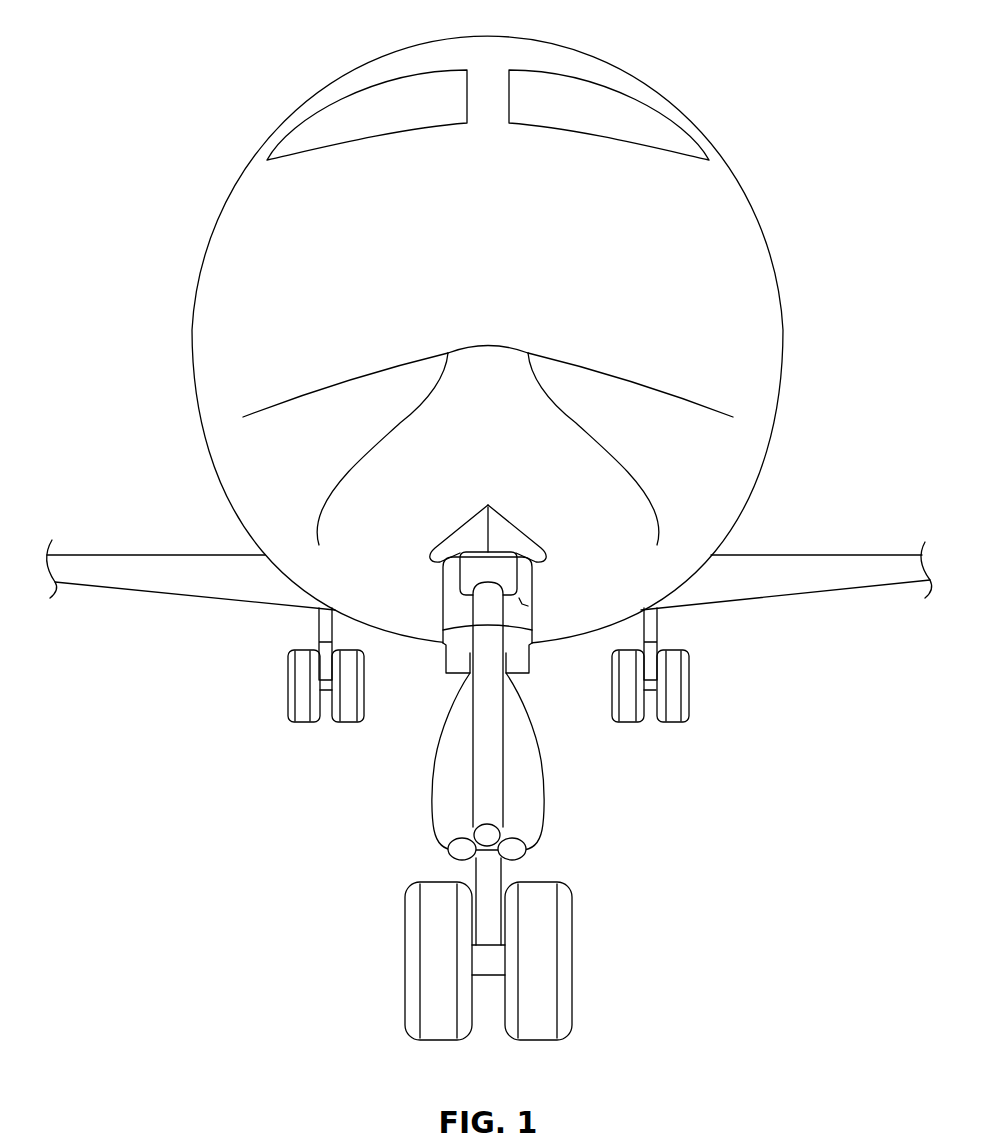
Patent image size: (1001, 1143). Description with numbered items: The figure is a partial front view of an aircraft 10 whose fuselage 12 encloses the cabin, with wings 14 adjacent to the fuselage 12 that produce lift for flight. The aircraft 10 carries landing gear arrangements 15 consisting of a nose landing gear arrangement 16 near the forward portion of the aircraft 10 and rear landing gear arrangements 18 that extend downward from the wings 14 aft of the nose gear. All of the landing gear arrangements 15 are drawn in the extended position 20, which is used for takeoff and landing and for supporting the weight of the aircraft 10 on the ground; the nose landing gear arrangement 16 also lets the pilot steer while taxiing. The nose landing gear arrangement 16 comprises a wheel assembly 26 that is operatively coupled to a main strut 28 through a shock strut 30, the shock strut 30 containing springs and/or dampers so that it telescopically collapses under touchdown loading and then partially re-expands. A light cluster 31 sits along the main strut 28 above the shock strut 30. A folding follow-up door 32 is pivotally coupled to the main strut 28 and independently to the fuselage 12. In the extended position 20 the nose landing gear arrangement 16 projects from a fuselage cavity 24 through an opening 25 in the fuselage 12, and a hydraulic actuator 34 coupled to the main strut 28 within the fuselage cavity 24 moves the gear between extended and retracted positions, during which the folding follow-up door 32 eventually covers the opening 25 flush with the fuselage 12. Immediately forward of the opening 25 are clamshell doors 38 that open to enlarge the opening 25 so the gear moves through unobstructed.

The aircraft 10 is at (224, 51).
The fuselage 12 is at (785, 363).
The wings 14 is at (183, 578).
The landing gear arrangements 15 is at (302, 665).
The nose landing gear arrangement 16 is at (507, 810).
The rear landing gear arrangements 18 is at (287, 683).
The extended position 20 is at (303, 723).
The fuselage cavity 24 is at (517, 597).
The opening 25 is at (457, 613).
The wheel assembly 26 is at (537, 937).
The main strut 28 is at (493, 750).
The shock strut 30 is at (483, 883).
The light cluster 31 is at (527, 847).
The folding follow-up door 32 is at (452, 795).
The actuator 34 is at (500, 563).
The clamshell doors 38 is at (465, 532).